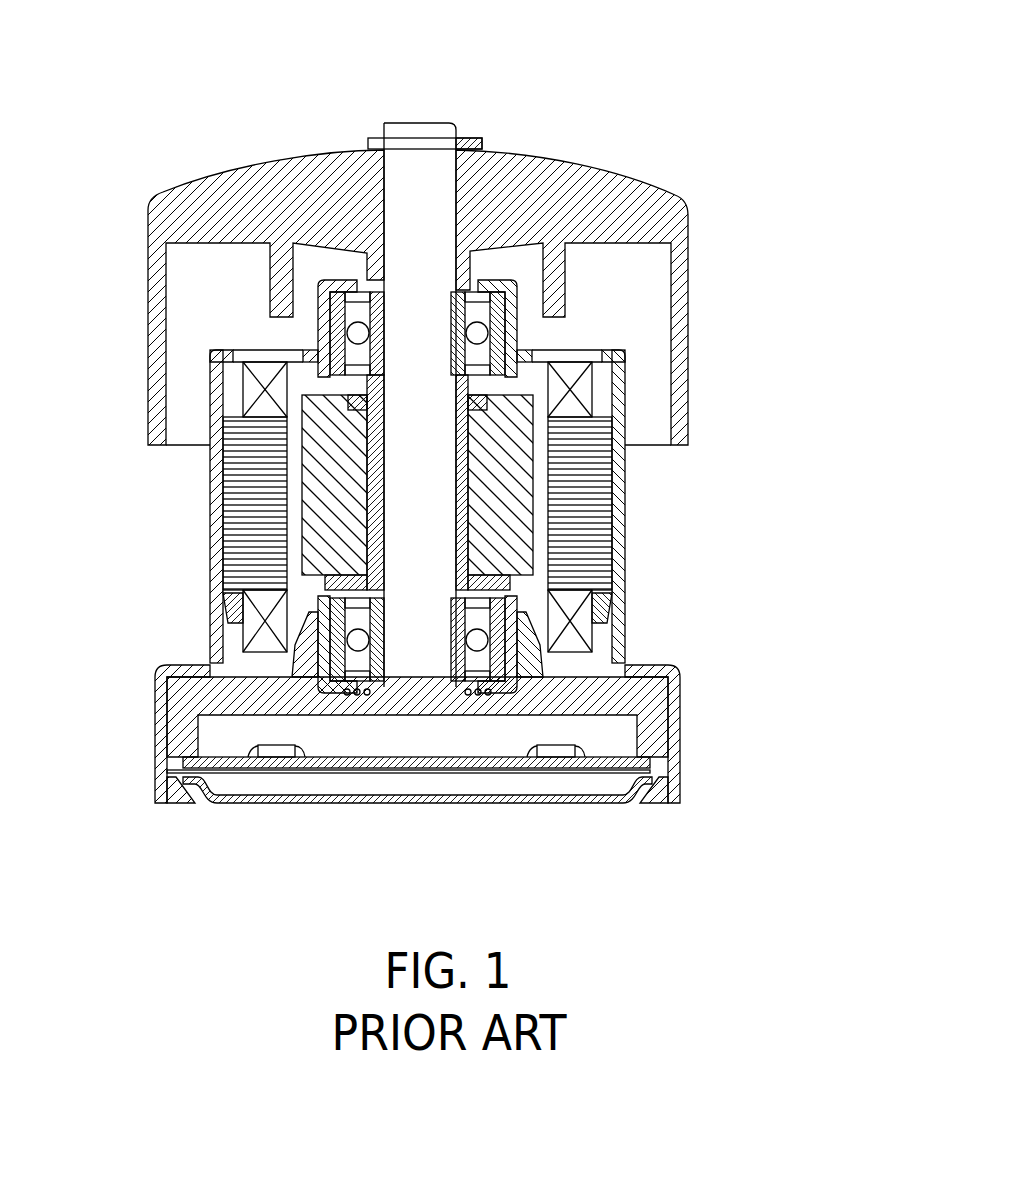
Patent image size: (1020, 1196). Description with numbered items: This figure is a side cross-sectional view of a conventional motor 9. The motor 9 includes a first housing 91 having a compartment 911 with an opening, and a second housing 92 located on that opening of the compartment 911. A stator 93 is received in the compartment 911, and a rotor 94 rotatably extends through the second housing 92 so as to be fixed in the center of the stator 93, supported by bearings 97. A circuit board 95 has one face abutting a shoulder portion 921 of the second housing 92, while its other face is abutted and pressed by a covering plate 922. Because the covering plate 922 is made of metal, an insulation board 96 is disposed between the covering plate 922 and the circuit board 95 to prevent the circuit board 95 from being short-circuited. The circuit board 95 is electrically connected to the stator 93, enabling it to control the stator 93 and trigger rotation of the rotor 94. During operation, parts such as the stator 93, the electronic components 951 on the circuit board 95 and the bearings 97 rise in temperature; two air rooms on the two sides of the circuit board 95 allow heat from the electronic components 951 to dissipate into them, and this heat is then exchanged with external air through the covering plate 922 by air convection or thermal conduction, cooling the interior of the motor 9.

The motor 9 is at (615, 110).
The first housing 91 is at (215, 527).
The compartment 911 is at (303, 378).
The second housing 92 is at (167, 722).
The shoulder portion 921 is at (193, 752).
The covering plate 922 is at (270, 803).
The stator 93 is at (587, 482).
The rotor 94 is at (580, 175).
The circuit board 95 is at (437, 758).
The electronic components 951 is at (558, 748).
The insulation board 96 is at (420, 772).
The bearings 97 is at (497, 318).